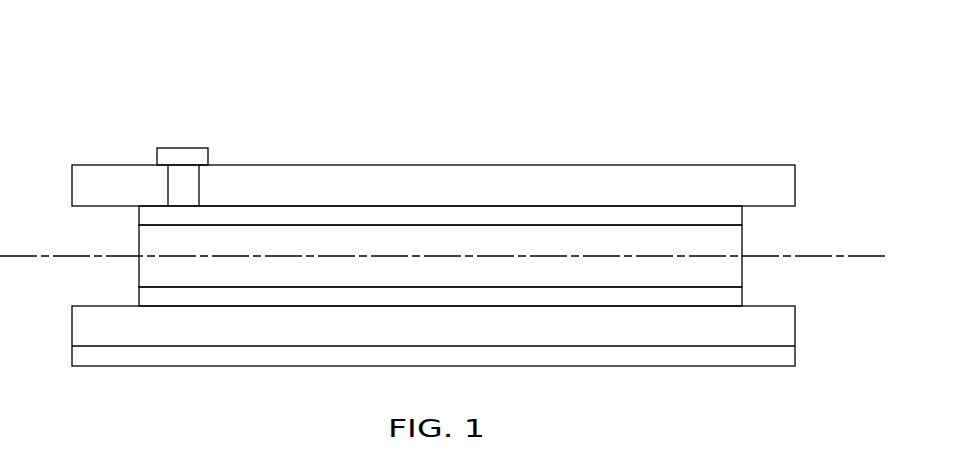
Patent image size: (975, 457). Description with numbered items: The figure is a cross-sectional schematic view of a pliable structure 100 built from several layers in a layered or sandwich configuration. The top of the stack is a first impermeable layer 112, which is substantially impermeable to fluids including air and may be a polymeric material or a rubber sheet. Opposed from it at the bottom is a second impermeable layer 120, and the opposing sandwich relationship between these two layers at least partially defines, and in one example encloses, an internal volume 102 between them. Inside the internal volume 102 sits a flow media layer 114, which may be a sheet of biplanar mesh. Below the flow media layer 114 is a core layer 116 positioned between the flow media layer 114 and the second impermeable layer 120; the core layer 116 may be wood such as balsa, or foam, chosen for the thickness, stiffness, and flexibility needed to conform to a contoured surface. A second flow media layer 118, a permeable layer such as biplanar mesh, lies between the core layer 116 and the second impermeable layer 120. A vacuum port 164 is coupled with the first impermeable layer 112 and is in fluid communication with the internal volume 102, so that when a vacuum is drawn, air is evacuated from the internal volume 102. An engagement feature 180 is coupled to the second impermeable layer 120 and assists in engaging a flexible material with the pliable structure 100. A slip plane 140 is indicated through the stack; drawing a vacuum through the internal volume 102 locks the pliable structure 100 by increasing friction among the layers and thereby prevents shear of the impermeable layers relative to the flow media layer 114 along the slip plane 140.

The pliable structure 100 is at (714, 142).
The internal volume 102 is at (120, 246).
The first impermeable layer 112 is at (795, 186).
The flow media layer 114 is at (742, 210).
The core layer 116 is at (742, 252).
The second flow media layer 118 is at (742, 297).
The second impermeable layer 120 is at (795, 325).
The slip plane 140 is at (872, 247).
The vacuum port 164 is at (212, 140).
The engagement feature 180 is at (727, 366).